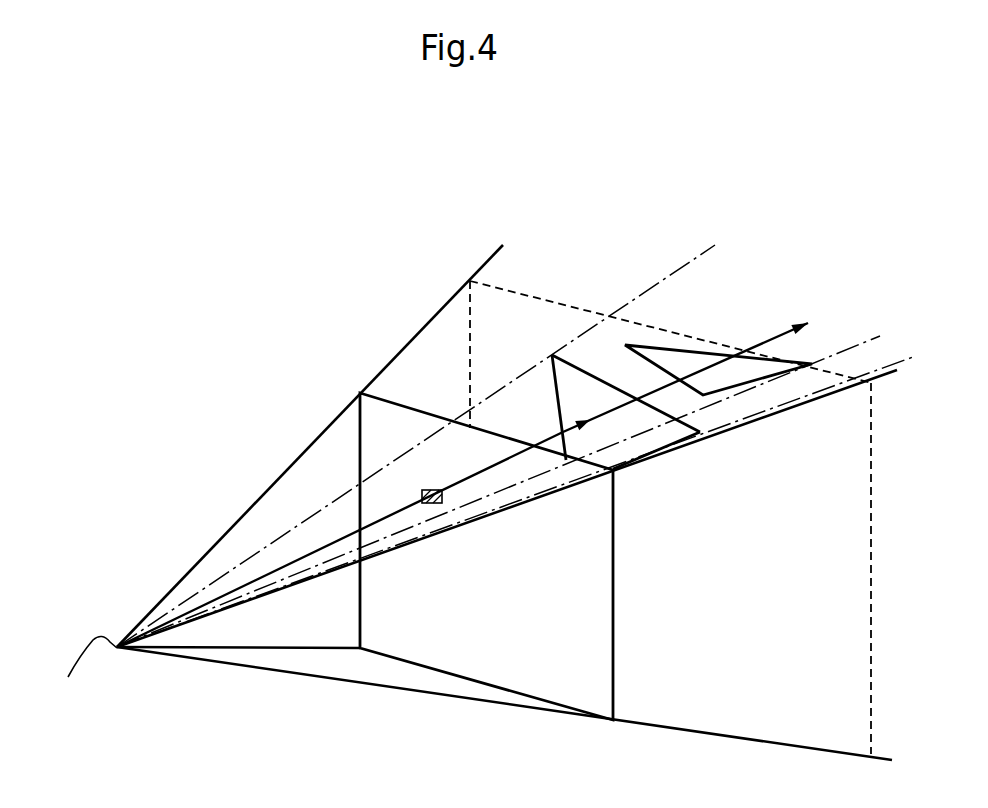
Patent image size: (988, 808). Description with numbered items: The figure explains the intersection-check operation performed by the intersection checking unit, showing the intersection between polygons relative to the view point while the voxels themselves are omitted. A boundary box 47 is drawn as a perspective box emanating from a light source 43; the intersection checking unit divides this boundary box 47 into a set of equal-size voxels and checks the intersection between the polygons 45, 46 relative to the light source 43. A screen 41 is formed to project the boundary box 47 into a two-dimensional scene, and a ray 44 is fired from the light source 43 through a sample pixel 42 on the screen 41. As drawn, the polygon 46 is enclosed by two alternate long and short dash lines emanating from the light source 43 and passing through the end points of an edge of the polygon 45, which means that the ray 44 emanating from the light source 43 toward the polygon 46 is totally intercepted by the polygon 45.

The screen 41 is at (613, 647).
The sample pixel 42 is at (421, 491).
The light source 43 is at (182, 677).
The ray 44 is at (257, 578).
The polygon 45 is at (748, 462).
The polygon 46 is at (677, 350).
The boundary box 47 is at (433, 343).